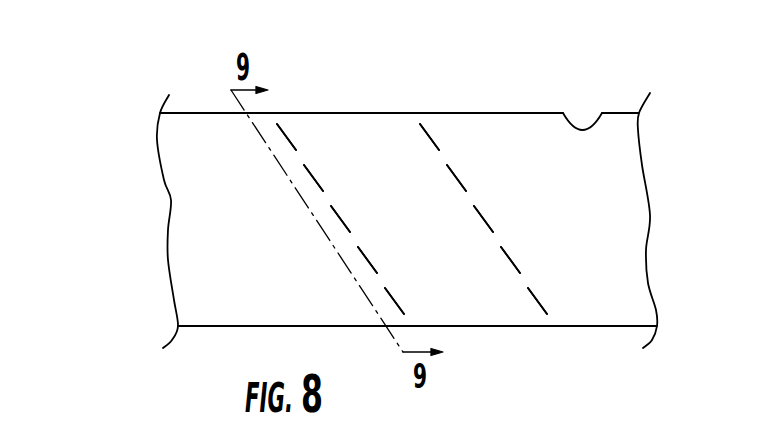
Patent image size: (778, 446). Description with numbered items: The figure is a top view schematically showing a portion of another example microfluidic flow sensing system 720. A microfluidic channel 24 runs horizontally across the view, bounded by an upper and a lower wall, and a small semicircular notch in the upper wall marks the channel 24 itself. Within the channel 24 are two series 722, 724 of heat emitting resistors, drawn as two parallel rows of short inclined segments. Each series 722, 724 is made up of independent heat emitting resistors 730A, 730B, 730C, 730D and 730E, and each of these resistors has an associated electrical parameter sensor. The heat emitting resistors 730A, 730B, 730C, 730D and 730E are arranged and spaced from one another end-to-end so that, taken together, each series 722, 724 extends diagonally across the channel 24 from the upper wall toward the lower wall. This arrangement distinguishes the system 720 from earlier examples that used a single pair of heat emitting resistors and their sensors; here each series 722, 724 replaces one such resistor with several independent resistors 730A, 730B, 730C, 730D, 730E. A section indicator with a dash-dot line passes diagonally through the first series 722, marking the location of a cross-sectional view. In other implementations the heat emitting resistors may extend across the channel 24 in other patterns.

The microfluidic flow sensing system 720 is at (102, 93).
The series of heat emitting resistors 722 is at (301, 129).
The series of heat emitting resistors 724 is at (446, 128).
The microfluidic channel 24 is at (598, 113).
The heat emitting resistor 730A is at (465, 137).
The heat emitting resistor 730B is at (492, 178).
The heat emitting resistor 730C is at (519, 219).
The heat emitting resistor 730D is at (546, 260).
The heat emitting resistor 730E is at (573, 301).